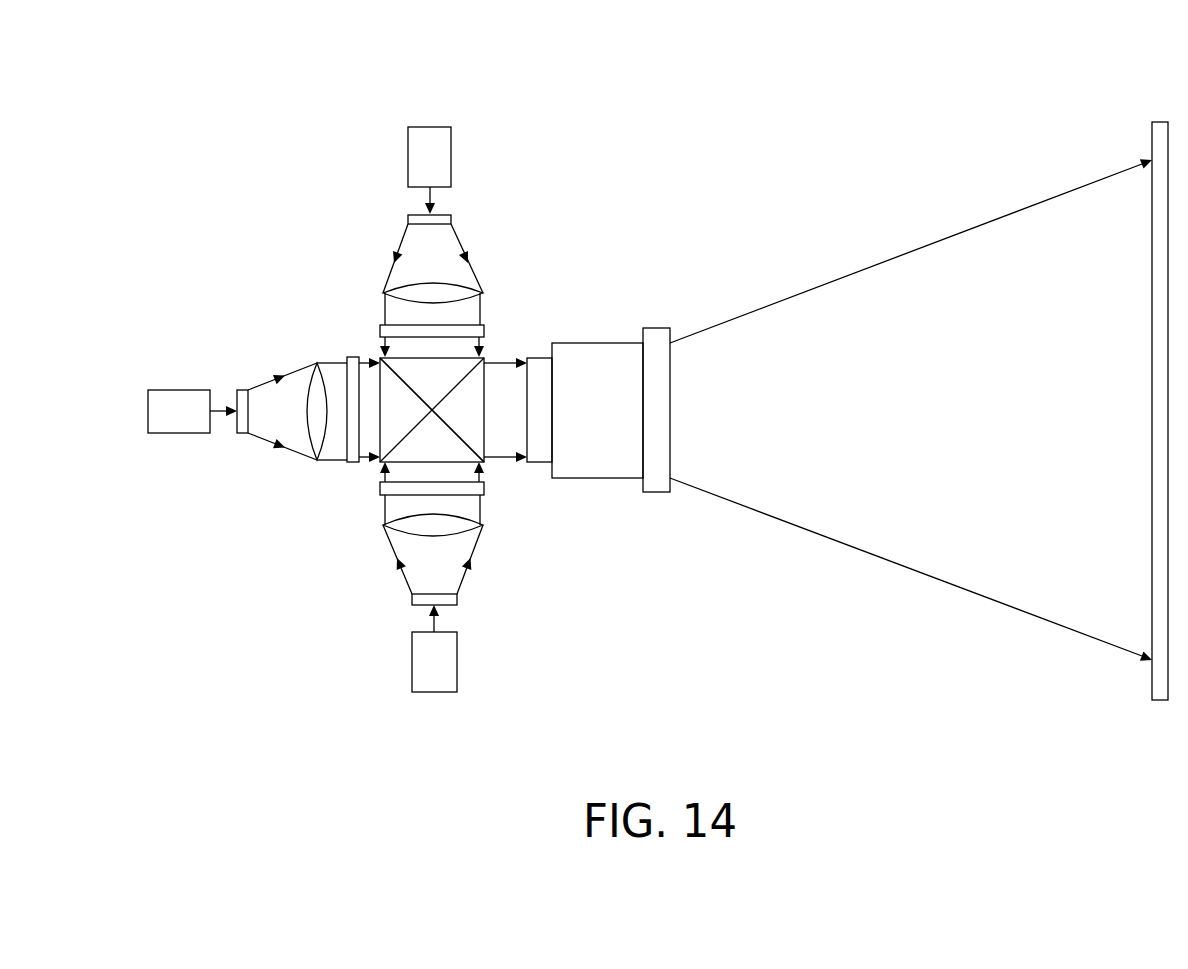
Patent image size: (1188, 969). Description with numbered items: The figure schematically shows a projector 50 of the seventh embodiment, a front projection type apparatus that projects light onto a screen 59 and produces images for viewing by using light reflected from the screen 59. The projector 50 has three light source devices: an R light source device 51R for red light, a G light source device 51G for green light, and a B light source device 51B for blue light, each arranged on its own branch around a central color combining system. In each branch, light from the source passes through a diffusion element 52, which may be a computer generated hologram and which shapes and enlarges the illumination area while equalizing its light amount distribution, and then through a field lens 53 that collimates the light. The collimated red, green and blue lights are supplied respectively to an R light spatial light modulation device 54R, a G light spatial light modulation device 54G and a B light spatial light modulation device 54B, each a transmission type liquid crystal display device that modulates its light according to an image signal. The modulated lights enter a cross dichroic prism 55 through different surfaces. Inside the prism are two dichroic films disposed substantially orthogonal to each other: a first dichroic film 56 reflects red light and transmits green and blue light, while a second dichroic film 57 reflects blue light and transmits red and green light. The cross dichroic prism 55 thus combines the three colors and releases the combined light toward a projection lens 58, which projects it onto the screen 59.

The projector 50 is at (281, 114).
The R light source device 51R is at (445, 143).
The G light source device 51G is at (163, 393).
The B light source device 51B is at (415, 660).
The diffusion element 52 is at (448, 217).
The field lens 53 is at (482, 292).
The R light spatial light modulation device 54R is at (483, 332).
The G light spatial light modulation device 54G is at (352, 356).
The B light spatial light modulation device 54B is at (382, 490).
The cross dichroic prism 55 is at (356, 480).
The first dichroic film 56 is at (476, 450).
The second dichroic film 57 is at (473, 370).
The projection lens 58 is at (655, 326).
The screen 59 is at (1160, 122).